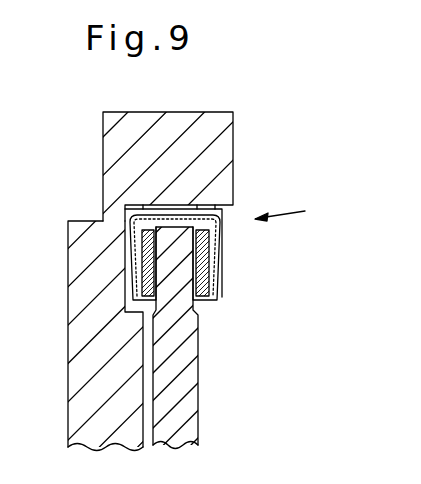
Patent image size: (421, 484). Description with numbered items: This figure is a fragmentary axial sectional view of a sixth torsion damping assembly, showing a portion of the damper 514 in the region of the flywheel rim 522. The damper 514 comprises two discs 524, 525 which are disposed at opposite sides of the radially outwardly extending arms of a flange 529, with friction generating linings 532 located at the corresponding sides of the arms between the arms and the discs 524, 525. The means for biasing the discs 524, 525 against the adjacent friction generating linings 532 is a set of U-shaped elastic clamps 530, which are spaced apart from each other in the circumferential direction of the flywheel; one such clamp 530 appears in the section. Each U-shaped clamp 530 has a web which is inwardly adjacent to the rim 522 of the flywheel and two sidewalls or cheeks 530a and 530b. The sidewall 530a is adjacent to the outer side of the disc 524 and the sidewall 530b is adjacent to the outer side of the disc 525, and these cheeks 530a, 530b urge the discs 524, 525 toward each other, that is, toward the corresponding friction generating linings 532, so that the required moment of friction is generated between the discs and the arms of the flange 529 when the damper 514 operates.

The damper 514 is at (300, 212).
The rim of the flywheel 522 is at (220, 147).
The disc 524 is at (124, 278).
The disc 525 is at (218, 297).
The flange 529 is at (190, 393).
The U-shaped elastic clamp 530 is at (159, 235).
The sidewall of the clamp 530a is at (131, 252).
The sidewall of the clamp 530b is at (222, 243).
The friction generating lining 532 is at (133, 298).